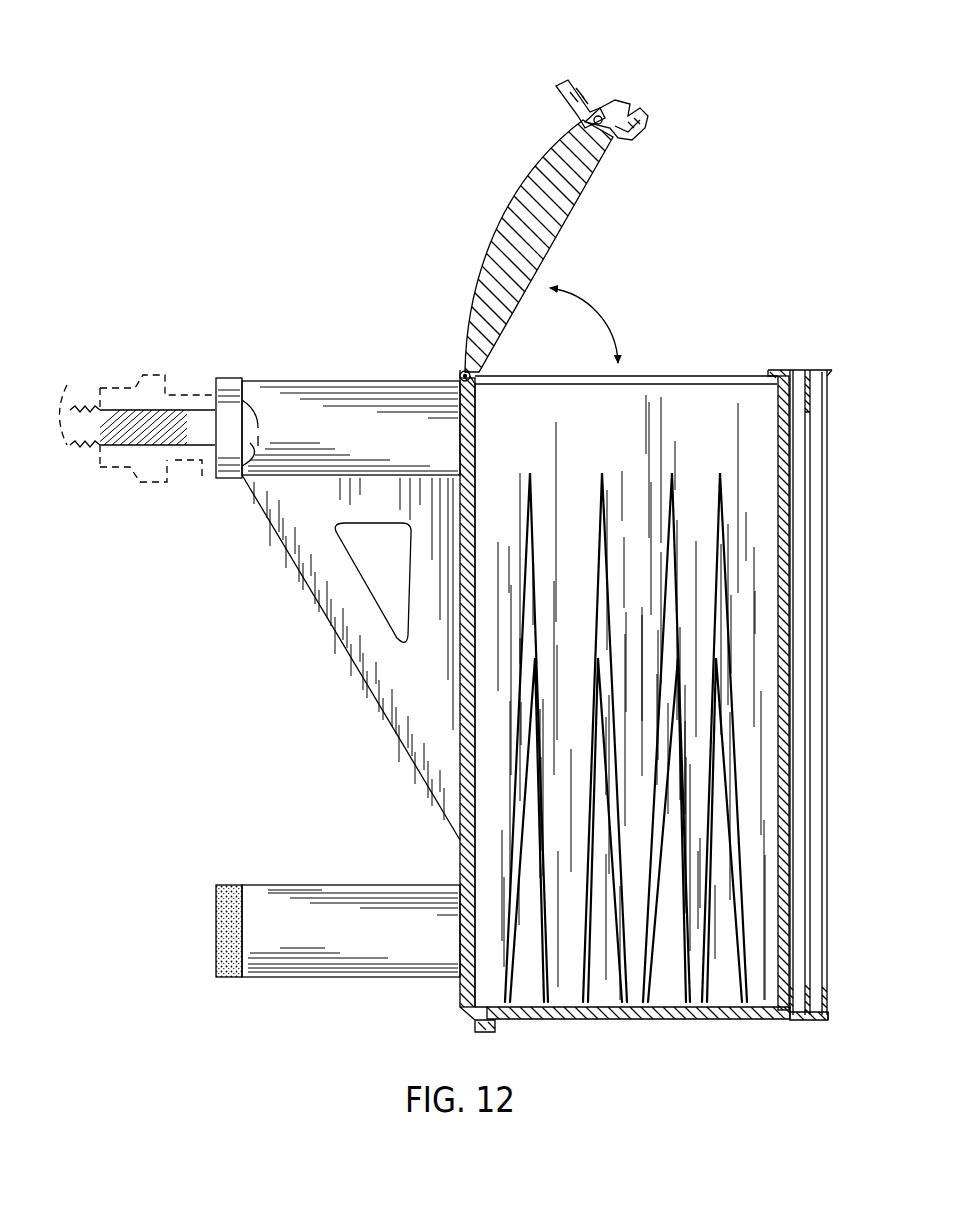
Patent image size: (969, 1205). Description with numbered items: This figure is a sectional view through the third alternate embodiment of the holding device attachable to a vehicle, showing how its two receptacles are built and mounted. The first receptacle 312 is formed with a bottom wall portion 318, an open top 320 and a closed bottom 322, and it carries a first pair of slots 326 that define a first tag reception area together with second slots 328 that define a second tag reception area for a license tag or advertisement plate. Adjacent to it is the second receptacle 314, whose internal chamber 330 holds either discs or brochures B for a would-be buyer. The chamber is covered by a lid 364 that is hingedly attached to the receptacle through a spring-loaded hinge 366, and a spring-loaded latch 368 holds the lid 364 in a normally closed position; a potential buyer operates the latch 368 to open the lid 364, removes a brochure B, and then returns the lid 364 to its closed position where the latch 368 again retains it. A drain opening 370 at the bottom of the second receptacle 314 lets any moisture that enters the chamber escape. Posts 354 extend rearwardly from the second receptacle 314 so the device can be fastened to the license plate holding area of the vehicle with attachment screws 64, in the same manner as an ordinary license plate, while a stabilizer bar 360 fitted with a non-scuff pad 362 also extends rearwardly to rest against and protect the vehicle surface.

The attachment screws 64 is at (78, 382).
The first receptacle 312 is at (805, 1030).
The second receptacle 314 is at (632, 1028).
The bottom wall portion 318 is at (830, 1012).
The open top 320 is at (805, 372).
The closed bottom 322 is at (818, 1000).
The first pair of slots 326 is at (808, 925).
The second slots 328 is at (798, 872).
The internal chamber 330 is at (700, 440).
The posts 354 is at (333, 385).
The stabilizer bar 360 is at (348, 890).
The non-scuff pad 362 is at (222, 928).
The lid 364 is at (512, 215).
The spring-loaded hinge 366 is at (458, 372).
The spring-loaded latch 368 is at (572, 82).
The drain opening 370 is at (470, 1020).
The brochures B is at (530, 470).